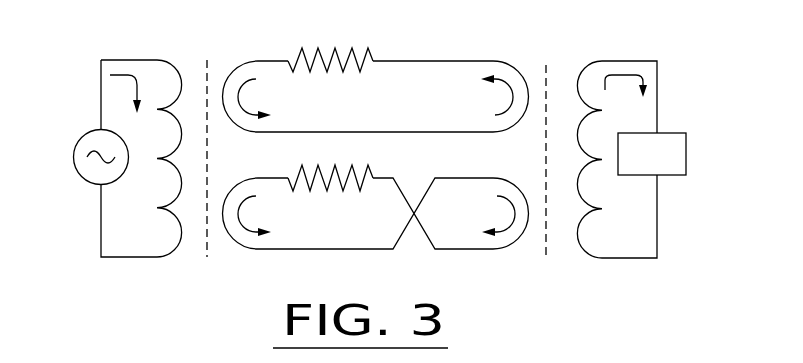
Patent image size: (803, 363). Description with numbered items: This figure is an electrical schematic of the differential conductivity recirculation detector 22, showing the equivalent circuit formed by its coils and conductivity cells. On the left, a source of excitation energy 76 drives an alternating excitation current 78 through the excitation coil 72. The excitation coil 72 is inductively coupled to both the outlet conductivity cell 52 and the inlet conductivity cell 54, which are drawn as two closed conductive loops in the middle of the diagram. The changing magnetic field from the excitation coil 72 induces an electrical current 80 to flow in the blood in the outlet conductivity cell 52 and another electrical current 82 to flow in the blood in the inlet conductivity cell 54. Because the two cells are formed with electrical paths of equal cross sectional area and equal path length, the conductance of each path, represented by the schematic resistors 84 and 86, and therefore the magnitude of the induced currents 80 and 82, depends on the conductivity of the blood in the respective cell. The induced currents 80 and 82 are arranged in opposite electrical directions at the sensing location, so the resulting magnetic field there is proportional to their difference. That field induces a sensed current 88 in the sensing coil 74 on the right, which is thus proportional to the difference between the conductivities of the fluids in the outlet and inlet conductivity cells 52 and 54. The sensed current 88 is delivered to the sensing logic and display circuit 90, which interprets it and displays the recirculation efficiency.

The differential conductivity recirculation detector 22 is at (375, 75).
The outlet conductivity cell 52 is at (434, 62).
The inlet conductivity cell 54 is at (288, 250).
The excitation coil 72 is at (127, 60).
The sensing coil 74 is at (588, 66).
The source of excitation energy 76 is at (83, 133).
The alternating excitation current 78 is at (140, 75).
The induced current in outlet conductivity cell 80 is at (240, 96).
The induced current in inlet conductivity cell 82 is at (240, 208).
The schematic resistor of outlet conductivity cell 84 is at (354, 49).
The schematic resistor of inlet conductivity cell 86 is at (336, 170).
The sensed current 88 is at (620, 75).
The sensing logic and display circuit 90 is at (663, 133).